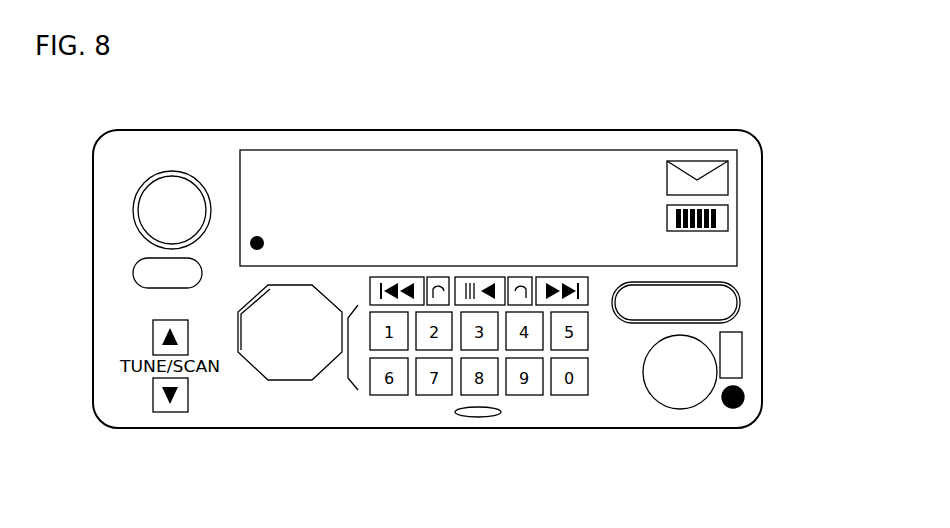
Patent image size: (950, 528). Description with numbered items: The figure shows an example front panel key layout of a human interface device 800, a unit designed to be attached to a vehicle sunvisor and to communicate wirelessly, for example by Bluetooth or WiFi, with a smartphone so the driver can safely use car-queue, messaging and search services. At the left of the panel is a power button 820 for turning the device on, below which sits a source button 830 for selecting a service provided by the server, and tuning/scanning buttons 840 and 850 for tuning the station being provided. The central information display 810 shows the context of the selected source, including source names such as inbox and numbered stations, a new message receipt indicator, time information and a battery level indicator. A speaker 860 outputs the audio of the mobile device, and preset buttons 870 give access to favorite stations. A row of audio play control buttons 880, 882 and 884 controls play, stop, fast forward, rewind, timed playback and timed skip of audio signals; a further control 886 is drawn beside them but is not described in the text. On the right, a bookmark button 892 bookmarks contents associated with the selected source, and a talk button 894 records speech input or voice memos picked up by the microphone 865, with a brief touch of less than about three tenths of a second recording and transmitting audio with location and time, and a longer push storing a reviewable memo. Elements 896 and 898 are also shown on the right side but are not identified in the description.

The human interface device 800 is at (764, 195).
The information display 810 is at (398, 149).
The power button 820 is at (132, 211).
The source button 830 is at (132, 273).
The tuning/scanning button 840 is at (151, 337).
The tuning/scanning button 850 is at (151, 395).
The speaker 860 is at (298, 384).
The microphone 865 is at (481, 418).
The preset buttons 870 is at (362, 388).
The audio play control button 880 is at (555, 282).
The audio play control button 882 is at (433, 307).
The audio play control button 884 is at (489, 307).
The redo/forward button 886 is at (531, 307).
The bookmark button 892 is at (743, 300).
The talk button 894 is at (701, 406).
The indicator dot / power button 896 is at (746, 397).
The small rectangular button 898 is at (744, 352).